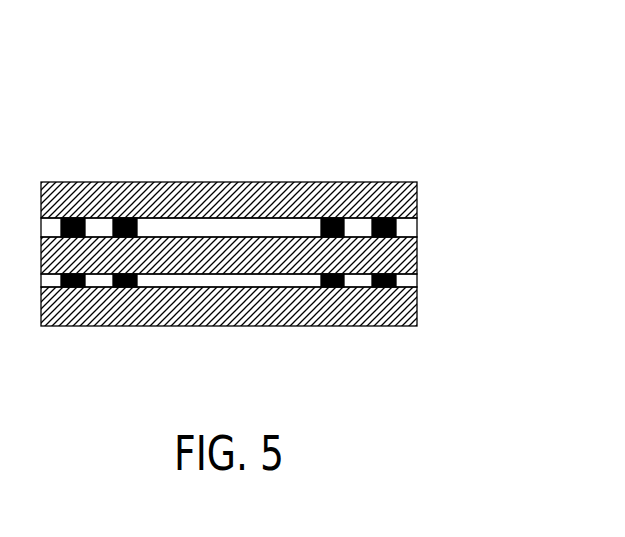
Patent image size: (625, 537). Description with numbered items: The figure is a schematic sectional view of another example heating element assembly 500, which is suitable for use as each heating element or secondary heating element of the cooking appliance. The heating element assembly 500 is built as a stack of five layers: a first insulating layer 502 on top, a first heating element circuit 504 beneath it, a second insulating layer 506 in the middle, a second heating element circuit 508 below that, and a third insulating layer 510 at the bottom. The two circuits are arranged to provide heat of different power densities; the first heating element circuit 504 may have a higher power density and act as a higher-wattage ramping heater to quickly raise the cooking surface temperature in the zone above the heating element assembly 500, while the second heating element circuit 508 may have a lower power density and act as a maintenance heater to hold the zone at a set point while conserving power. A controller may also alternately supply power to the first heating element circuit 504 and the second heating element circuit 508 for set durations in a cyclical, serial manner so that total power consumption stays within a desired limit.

The heating element assembly 500 is at (393, 92).
The first insulating layer 502 is at (417, 201).
The first heating element circuit 504 is at (417, 227).
The second insulating layer 506 is at (417, 257).
The second heating element circuit 508 is at (417, 285).
The third insulating layer 510 is at (417, 312).